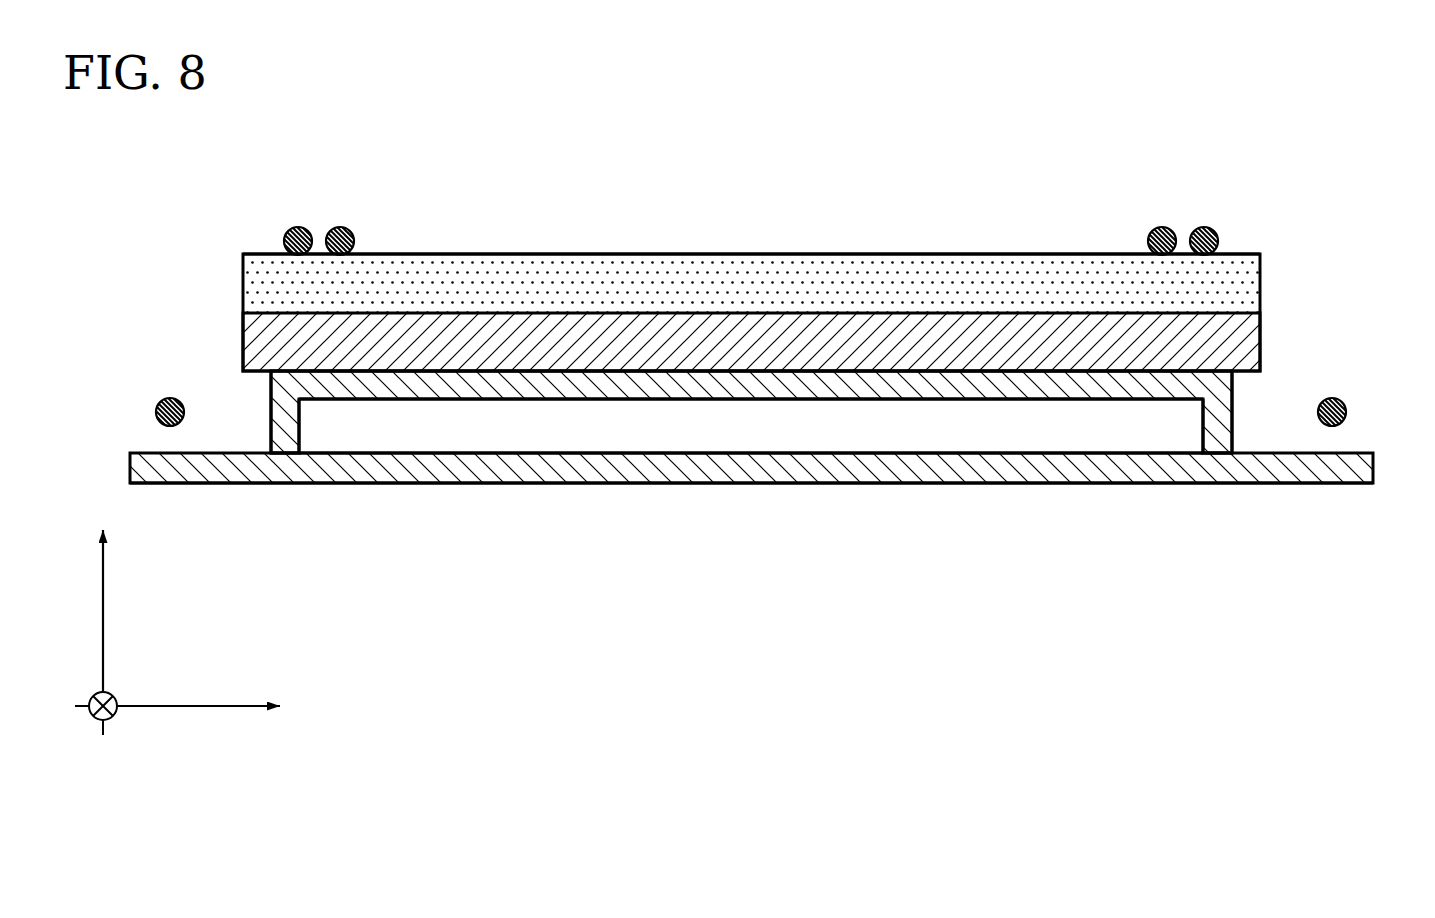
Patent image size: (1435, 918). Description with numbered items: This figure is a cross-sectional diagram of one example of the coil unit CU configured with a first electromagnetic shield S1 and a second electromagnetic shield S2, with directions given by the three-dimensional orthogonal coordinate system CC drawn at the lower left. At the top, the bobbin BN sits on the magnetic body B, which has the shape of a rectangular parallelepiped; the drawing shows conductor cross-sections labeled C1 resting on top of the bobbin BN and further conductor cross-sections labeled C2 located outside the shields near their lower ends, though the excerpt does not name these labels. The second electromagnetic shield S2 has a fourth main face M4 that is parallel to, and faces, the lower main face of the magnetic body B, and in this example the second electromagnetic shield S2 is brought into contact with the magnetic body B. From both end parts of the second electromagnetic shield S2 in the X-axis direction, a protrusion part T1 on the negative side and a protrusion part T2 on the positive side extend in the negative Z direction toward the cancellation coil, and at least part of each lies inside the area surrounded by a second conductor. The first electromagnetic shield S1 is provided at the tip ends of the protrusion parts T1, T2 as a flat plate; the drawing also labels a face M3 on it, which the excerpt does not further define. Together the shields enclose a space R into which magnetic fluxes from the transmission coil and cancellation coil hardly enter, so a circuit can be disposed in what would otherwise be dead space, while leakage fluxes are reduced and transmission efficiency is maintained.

The coil unit CU is at (645, 205).
The bobbin BN is at (873, 255).
The fourth main face M4 is at (1228, 366).
The base plate M3 is at (1280, 452).
The magnetic body B is at (918, 371).
The protrusion part T1 is at (310, 413).
The protrusion part T2 is at (1240, 413).
The first electromagnetic shield S1 is at (717, 483).
The second electromagnetic shield S2 is at (560, 399).
The space R is at (1080, 412).
The first cooling pipes C1 is at (323, 217).
The second cooling pipes C2 is at (170, 388).
The three-dimensional orthogonal coordinate system CC is at (117, 685).